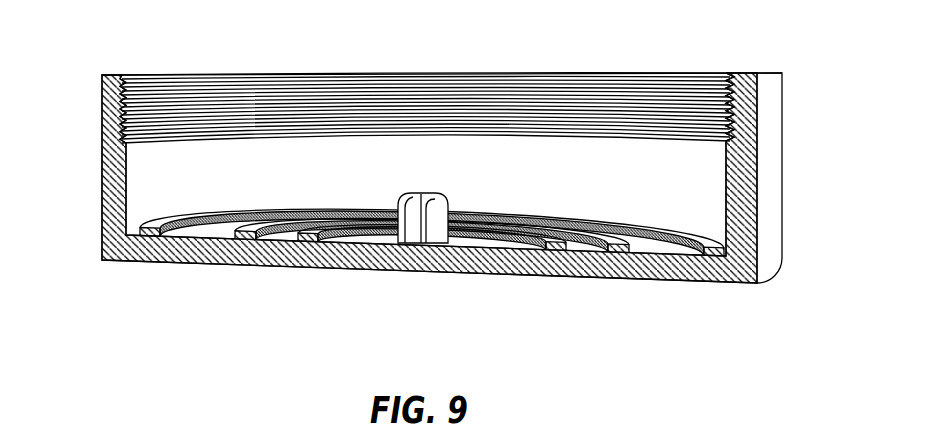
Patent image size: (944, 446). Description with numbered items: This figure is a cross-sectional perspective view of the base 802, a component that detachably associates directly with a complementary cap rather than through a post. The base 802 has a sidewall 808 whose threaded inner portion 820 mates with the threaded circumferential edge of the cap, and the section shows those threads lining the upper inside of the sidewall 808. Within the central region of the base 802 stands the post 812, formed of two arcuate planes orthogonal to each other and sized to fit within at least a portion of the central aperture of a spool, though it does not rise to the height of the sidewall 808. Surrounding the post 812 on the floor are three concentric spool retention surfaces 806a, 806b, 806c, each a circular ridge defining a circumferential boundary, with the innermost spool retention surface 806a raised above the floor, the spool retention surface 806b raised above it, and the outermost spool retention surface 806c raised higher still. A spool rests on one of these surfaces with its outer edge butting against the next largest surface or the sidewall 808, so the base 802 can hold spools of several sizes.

The base 802 is at (94, 79).
The innermost spool retention surface 806a is at (557, 250).
The spool retention surface 806b is at (620, 250).
The outermost spool retention surface 806c is at (687, 250).
The sidewall 808 is at (743, 198).
The post 812 is at (415, 236).
The threaded inner portion 820 is at (731, 108).